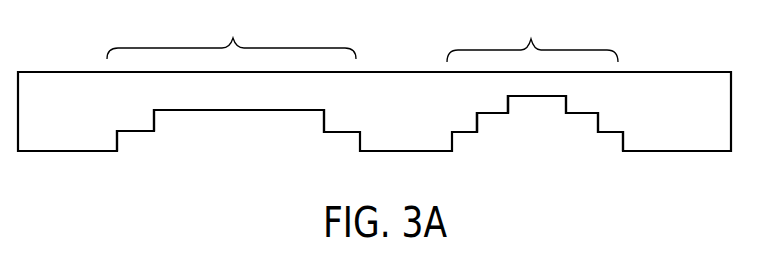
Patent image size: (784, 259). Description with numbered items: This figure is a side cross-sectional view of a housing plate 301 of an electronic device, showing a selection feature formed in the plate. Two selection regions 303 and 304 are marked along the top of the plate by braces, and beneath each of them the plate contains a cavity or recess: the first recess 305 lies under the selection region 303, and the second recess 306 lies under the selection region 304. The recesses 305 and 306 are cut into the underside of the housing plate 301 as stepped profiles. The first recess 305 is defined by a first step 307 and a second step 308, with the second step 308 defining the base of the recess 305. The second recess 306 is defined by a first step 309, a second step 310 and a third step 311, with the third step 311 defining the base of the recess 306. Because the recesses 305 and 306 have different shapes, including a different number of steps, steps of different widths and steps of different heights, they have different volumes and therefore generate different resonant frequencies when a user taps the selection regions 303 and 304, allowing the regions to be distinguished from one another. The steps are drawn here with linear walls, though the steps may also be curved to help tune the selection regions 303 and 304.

The housing plate 301 is at (707, 72).
The selection region 303 is at (231, 36).
The selection region 304 is at (532, 39).
The first recess 305 is at (229, 136).
The second recess 306 is at (538, 136).
The first step 307 is at (143, 133).
The second step 308 is at (190, 111).
The first step 309 is at (614, 132).
The second step 310 is at (495, 115).
The third step 311 is at (525, 97).